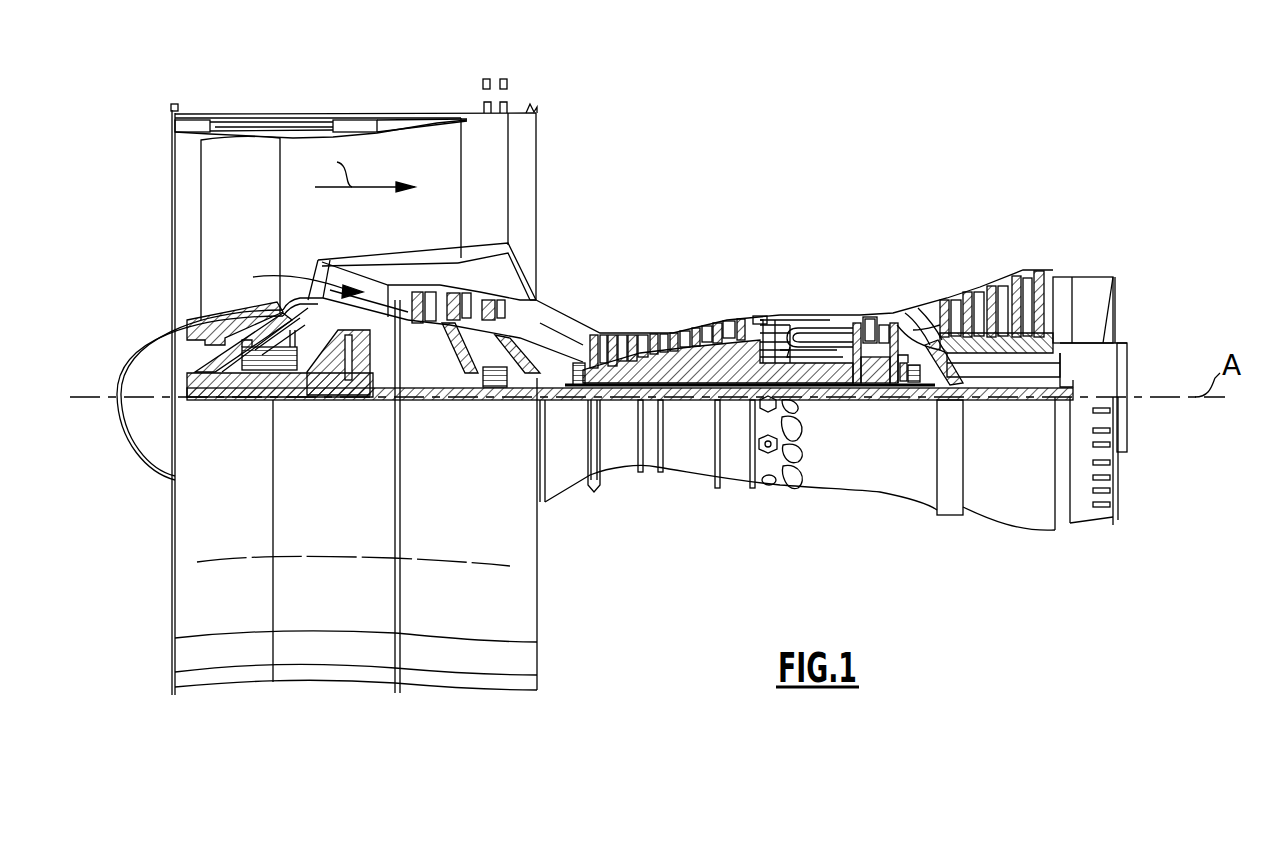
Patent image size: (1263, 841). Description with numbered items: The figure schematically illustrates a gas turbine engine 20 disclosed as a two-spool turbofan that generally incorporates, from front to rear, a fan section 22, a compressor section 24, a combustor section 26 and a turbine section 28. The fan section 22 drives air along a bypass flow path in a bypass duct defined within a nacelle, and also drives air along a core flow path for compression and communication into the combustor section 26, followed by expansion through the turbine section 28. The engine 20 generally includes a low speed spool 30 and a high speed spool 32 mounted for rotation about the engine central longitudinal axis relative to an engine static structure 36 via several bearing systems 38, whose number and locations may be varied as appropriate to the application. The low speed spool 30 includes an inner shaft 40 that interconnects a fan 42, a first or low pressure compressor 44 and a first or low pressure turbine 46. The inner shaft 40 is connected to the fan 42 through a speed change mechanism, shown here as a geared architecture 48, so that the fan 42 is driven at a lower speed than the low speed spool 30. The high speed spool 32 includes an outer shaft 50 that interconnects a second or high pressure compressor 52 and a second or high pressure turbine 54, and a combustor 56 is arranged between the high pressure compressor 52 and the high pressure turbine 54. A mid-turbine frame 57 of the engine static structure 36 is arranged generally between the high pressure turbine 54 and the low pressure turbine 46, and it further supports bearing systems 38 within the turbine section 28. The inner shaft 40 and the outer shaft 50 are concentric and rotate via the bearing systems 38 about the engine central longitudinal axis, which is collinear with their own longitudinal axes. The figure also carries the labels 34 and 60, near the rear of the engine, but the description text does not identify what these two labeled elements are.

The gas turbine engine 20 is at (811, 167).
The fan section 22 is at (382, 86).
The compressor section 24 is at (393, 233).
The combustor section 26 is at (847, 233).
The turbine section 28 is at (1067, 233).
The low speed spool 30 is at (693, 415).
The high speed spool 32 is at (737, 350).
The turbine exhaust case 34 is at (1024, 360).
The engine static structure 36 is at (735, 500).
The bearing systems 38 is at (250, 396).
The inner shaft 40 is at (550, 400).
The fan 42 is at (255, 243).
The first (or low) pressure compressor 44 is at (470, 300).
The first (or low) pressure turbine 46 is at (1003, 287).
The geared architecture 48 is at (362, 380).
The outer shaft 50 is at (816, 378).
The second (or high) pressure compressor 52 is at (662, 353).
The second (or high) pressure turbine 54 is at (873, 317).
The combustor 56 is at (808, 337).
The mid-turbine frame 57 is at (916, 308).
The airfoils of mid-turbine frame 60 is at (923, 350).